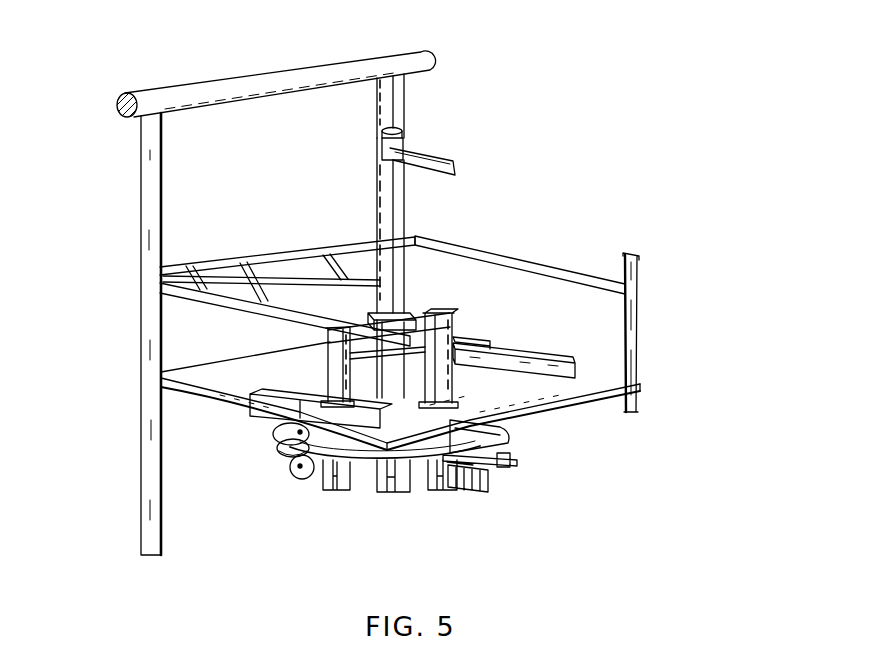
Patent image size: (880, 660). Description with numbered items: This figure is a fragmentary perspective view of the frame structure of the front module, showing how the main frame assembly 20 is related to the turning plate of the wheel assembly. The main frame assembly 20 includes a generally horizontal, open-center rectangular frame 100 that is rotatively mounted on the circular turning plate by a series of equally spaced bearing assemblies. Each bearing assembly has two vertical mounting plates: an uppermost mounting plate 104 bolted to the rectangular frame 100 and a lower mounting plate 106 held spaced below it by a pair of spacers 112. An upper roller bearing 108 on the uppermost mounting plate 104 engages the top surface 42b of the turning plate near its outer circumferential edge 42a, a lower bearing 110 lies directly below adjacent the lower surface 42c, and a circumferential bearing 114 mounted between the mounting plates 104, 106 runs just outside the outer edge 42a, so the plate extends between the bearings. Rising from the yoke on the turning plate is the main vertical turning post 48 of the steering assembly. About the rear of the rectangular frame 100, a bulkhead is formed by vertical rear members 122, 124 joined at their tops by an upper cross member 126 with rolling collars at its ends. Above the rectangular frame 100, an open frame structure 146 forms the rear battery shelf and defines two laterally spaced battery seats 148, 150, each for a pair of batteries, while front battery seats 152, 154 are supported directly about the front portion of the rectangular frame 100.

The main frame assembly 20 is at (148, 315).
The outer circumferential edge 42a is at (327, 460).
The top surface 42b is at (413, 453).
The lower surface 42c is at (363, 463).
The main vertical turning post 48 is at (393, 202).
The rectangular frame 100 is at (577, 392).
The uppermost mounting plate 104 is at (500, 444).
The lower mounting plate 106 is at (470, 478).
The upper roller bearing 108 is at (287, 427).
The lower bearing 110 is at (300, 470).
The spacers 112 is at (497, 480).
The circumferential bearing 114 is at (283, 452).
The vertical rear member 122 is at (386, 104).
The vertical rear member 124 is at (153, 150).
The upper cross member 126 is at (262, 86).
The open frame structure 146 is at (277, 257).
The rear battery seat 148 is at (220, 287).
The rear battery seat 150 is at (428, 220).
The front battery seat 152 is at (265, 398).
The front battery seat 154 is at (530, 367).